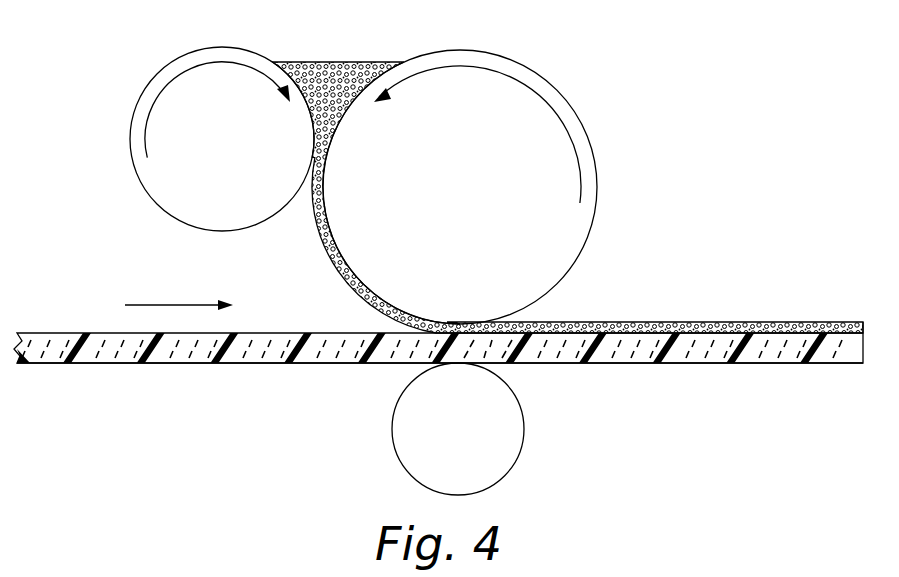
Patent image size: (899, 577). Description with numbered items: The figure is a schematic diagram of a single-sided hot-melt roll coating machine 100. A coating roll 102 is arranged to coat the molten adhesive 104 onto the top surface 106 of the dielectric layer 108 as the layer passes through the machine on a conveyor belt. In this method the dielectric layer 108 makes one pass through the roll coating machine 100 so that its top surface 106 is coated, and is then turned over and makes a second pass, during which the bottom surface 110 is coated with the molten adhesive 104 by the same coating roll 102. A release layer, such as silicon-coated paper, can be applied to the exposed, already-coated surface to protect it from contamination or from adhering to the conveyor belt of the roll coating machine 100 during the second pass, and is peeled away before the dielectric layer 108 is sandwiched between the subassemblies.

The hot-melt roll coating machine 100 is at (743, 108).
The coating roll 102 is at (556, 250).
The molten adhesive 104 is at (353, 82).
The top surface 106 is at (82, 333).
The dielectric layer 108 is at (193, 350).
The bottom surface 110 is at (714, 363).